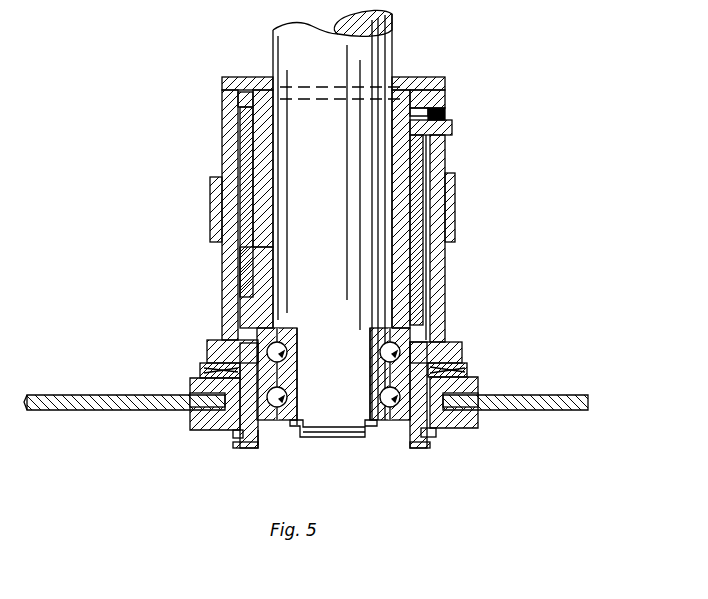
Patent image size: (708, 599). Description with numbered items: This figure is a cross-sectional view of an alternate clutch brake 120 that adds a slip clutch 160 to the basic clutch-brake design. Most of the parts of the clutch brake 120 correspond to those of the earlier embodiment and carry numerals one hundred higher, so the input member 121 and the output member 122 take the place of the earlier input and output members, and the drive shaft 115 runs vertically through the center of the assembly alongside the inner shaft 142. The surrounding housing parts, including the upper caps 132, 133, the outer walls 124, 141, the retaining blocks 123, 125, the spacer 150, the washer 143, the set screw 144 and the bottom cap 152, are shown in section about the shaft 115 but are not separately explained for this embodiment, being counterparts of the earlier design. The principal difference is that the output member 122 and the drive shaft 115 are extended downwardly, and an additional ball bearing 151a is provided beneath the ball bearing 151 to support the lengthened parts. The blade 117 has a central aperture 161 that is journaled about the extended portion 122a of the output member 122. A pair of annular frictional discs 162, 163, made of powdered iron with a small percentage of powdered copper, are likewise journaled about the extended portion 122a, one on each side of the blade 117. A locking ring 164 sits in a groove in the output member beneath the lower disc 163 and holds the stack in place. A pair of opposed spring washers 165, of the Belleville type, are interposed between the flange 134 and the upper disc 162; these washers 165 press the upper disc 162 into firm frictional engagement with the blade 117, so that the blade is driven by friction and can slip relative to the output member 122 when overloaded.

The drive shaft 115 is at (383, 46).
The blade 117 is at (568, 410).
The clutch brake 120 is at (576, 128).
The input member 121 is at (230, 258).
The output member 122 is at (242, 316).
The extended portion of the output member 122a is at (258, 440).
The retaining block 123 is at (455, 196).
The outer wall 124 is at (438, 268).
The retaining block 125 is at (212, 208).
The left cap 132 is at (222, 80).
The right cap 133 is at (405, 88).
The flange 134 is at (462, 345).
The inner wall 141 is at (425, 300).
The inner shaft 142 is at (378, 308).
The washer 143 is at (452, 128).
The set screw 144 is at (440, 114).
The spacer strip 150 is at (240, 102).
The ball bearing 151 is at (292, 362).
The additional ball bearing 151a is at (398, 438).
The bottom cap 152 is at (330, 420).
The slip clutch 160 is at (192, 362).
The central aperture 161 is at (240, 448).
The upper frictional disc 162 is at (190, 386).
The lower frictional disc 163 is at (192, 425).
The locking ring 164 is at (436, 437).
The spring washers 165 is at (465, 374).